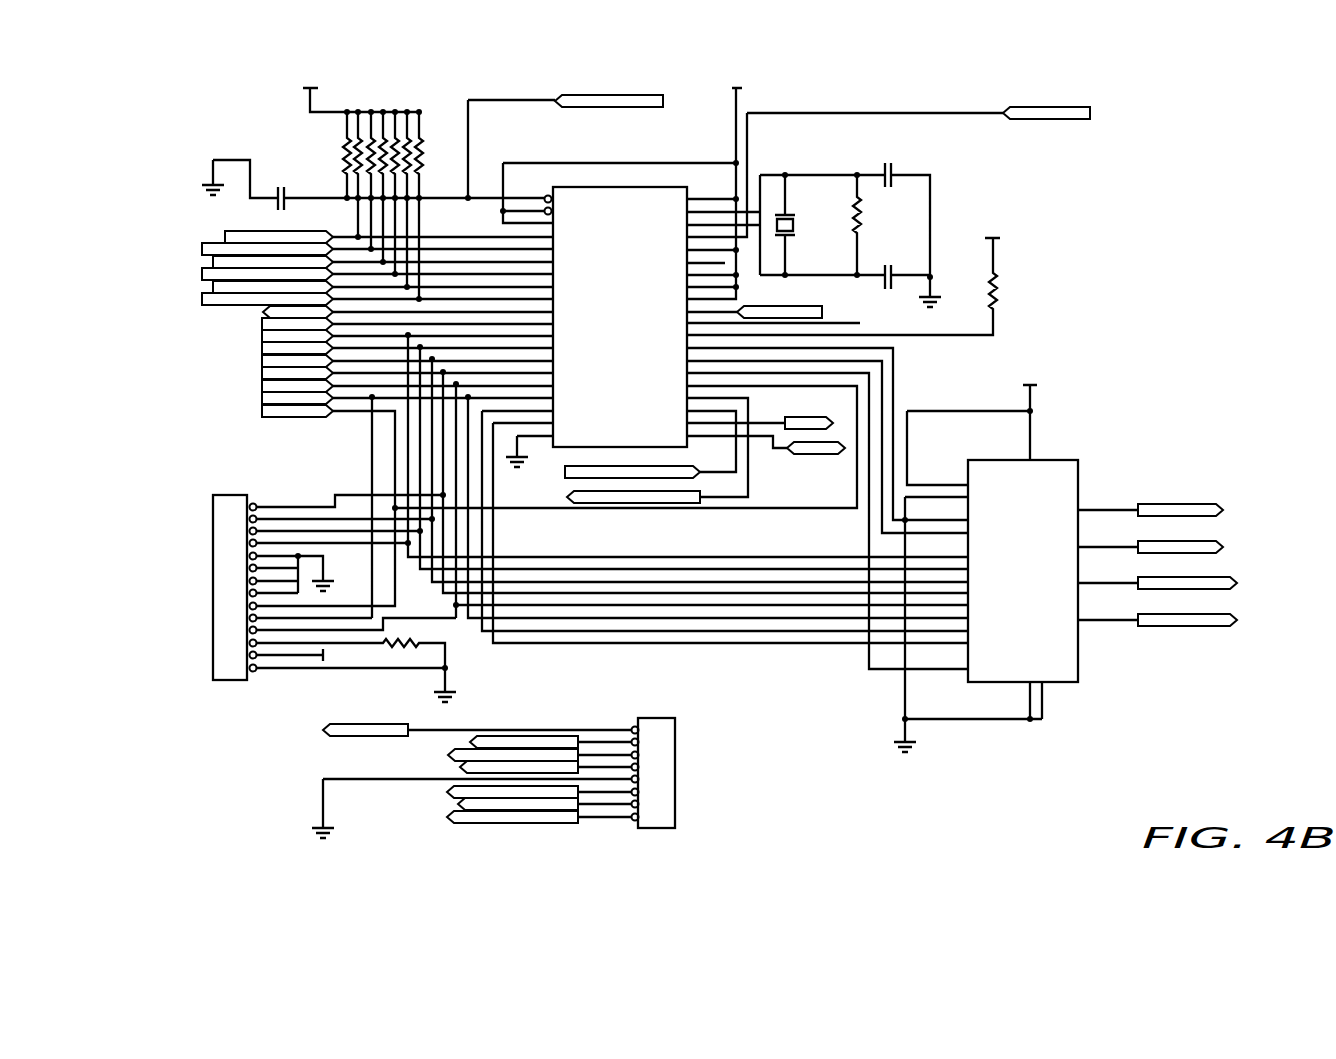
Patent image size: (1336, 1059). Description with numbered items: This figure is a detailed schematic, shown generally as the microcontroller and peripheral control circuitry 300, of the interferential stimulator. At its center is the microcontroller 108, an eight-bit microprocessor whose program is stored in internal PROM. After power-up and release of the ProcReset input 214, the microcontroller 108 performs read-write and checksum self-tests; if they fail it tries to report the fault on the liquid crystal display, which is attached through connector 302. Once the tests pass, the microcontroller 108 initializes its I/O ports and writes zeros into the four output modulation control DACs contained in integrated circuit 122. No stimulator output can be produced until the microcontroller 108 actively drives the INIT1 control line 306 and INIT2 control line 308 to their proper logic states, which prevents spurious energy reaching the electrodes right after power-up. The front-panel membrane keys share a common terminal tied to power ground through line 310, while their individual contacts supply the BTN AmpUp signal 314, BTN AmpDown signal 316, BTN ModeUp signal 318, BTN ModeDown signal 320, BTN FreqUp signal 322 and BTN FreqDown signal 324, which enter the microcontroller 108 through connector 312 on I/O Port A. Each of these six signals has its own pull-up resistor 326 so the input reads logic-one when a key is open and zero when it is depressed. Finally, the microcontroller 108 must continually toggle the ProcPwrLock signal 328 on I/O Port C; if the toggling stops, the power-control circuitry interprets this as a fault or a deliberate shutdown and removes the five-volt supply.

The microcontroller 108 is at (618, 190).
The integrated circuit 122 is at (1068, 466).
The ProcReset input 214 is at (607, 94).
The microcontroller and peripheral control circuitry 300 is at (1120, 88).
The connector 302 is at (213, 497).
The INIT1 control line 306 is at (263, 325).
The INIT2 control line 308 is at (263, 313).
The line 310 is at (323, 780).
The connector 312 is at (683, 752).
The BTN AmpUp signal 314 is at (481, 740).
The BTN AmpDown signal 316 is at (452, 753).
The BTN ModeUp signal 318 is at (462, 770).
The BTN ModeDown signal 320 is at (450, 793).
The BTN FreqUp signal 322 is at (475, 805).
The BTN FreqDown signal 324 is at (502, 817).
The pull-up resistor 326 is at (310, 150).
The ProcPwrLock signal 328 is at (596, 503).